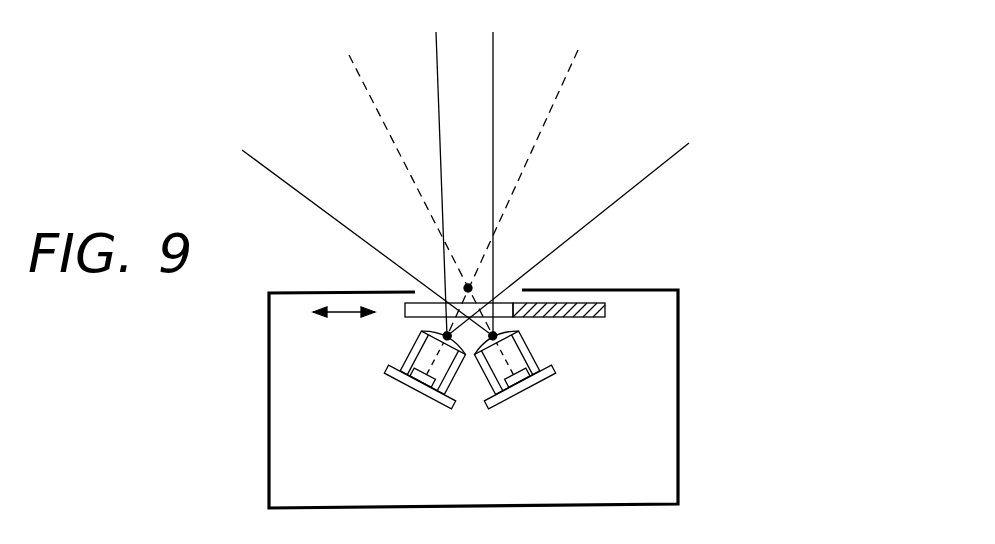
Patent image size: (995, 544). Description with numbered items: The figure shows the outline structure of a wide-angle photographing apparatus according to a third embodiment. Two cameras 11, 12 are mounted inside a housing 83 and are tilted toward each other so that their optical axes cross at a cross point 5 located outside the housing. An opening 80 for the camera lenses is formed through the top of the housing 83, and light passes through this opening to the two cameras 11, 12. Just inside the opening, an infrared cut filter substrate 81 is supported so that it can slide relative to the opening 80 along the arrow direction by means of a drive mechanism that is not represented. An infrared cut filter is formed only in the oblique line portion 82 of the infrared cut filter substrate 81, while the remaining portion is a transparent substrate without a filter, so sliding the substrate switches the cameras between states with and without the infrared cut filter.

The cross point 5 is at (467, 286).
The camera 11 is at (533, 390).
The camera 12 is at (410, 392).
The opening 80 is at (500, 279).
The infrared cut filter substrate 81 is at (406, 310).
The oblique line portion 82 is at (585, 303).
The housing 83 is at (680, 362).